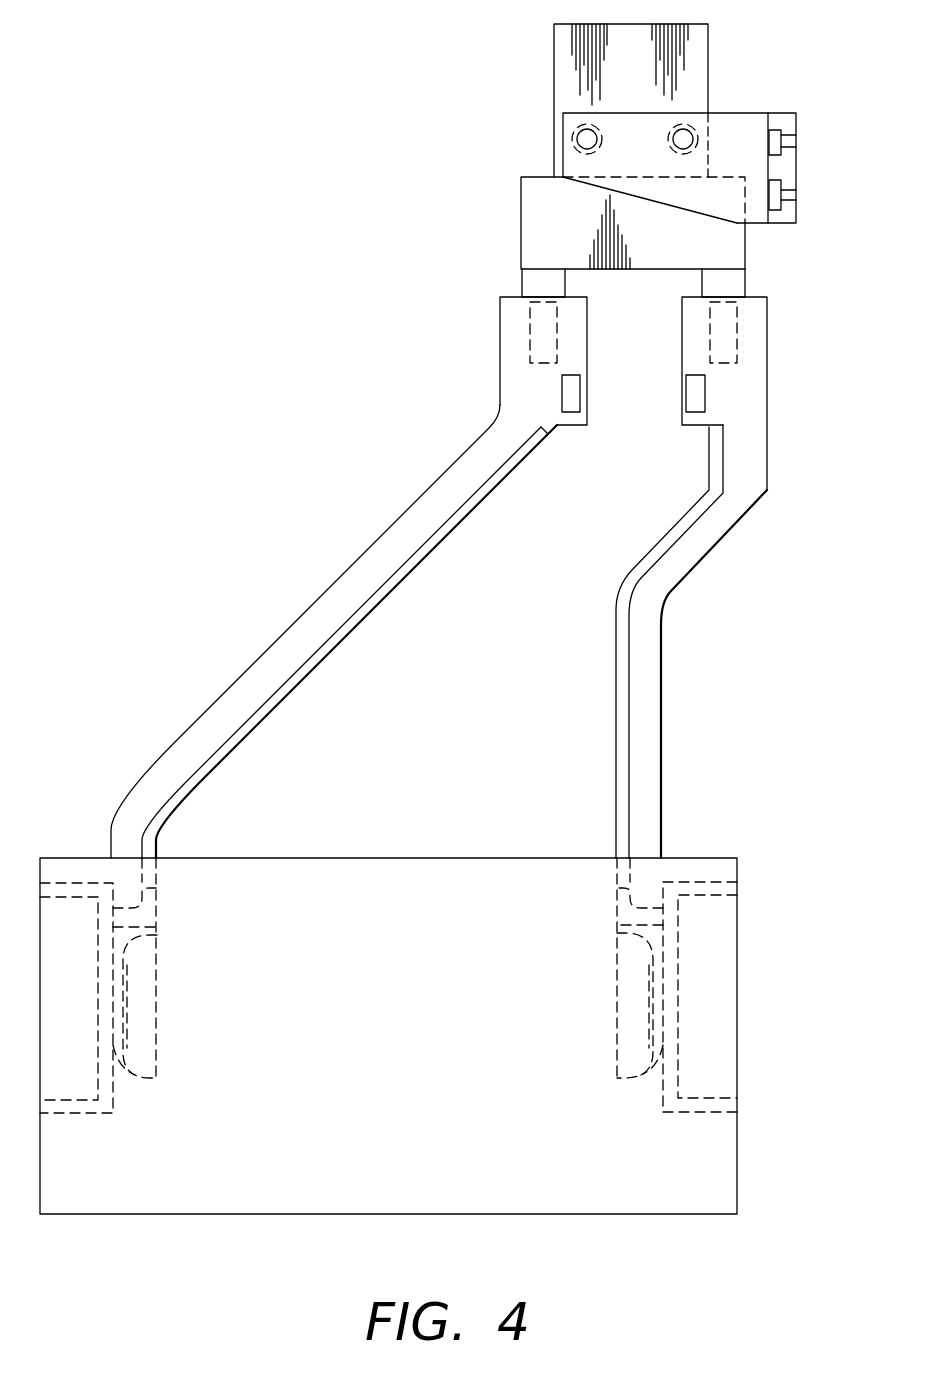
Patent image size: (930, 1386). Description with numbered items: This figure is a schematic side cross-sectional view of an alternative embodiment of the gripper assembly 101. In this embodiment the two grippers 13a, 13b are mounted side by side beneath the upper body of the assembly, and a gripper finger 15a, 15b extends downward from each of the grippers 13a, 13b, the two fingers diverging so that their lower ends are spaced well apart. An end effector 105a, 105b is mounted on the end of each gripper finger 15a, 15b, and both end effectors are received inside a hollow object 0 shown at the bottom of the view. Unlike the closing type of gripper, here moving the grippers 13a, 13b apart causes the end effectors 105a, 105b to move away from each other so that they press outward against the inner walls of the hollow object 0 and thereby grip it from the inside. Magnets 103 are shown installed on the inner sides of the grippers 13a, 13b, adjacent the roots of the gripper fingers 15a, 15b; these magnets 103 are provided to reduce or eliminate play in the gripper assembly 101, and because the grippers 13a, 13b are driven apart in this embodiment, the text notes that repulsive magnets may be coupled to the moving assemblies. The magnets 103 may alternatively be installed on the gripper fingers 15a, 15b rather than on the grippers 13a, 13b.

The gripper assembly 101 is at (495, 43).
The gripper 13a is at (500, 346).
The gripper 13b is at (767, 328).
The magnets 103 is at (693, 412).
The gripper finger 15a is at (247, 666).
The gripper finger 15b is at (661, 745).
The hollow object 0 is at (385, 858).
The end effector 105a is at (157, 1018).
The end effector 105b is at (617, 1025).